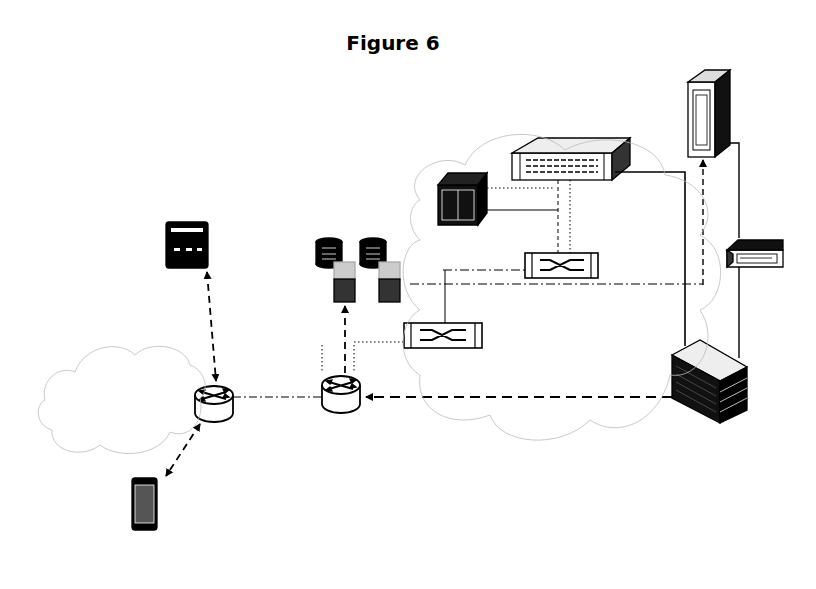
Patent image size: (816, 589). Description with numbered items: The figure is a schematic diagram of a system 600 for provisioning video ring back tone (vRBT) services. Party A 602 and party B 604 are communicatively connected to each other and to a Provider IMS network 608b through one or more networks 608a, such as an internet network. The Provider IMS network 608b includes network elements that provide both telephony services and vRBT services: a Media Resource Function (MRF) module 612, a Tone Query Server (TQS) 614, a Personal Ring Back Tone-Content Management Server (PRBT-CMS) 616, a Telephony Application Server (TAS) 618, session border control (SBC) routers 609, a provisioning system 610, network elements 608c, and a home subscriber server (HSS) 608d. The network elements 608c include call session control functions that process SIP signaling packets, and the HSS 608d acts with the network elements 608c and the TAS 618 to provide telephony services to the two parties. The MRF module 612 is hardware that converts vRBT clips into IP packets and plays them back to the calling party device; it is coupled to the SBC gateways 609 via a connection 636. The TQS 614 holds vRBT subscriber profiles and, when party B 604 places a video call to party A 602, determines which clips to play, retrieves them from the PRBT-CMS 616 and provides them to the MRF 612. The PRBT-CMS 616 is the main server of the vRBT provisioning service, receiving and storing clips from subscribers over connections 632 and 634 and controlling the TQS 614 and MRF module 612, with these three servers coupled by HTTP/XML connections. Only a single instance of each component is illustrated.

The system 600 is at (414, 306).
The party A 602 is at (158, 517).
The party B 604 is at (166, 230).
The networks 608a is at (135, 399).
The Provider IMS network 608b is at (562, 349).
The network elements 608c is at (582, 280).
The home subscriber server (HSS) 608d is at (462, 178).
The session border control (SBC) routers 609 is at (341, 415).
The provisioning system 610 is at (358, 245).
The Media Resource Function (MRF) module 612 is at (705, 422).
The Tone Query Server (TQS) 614 is at (745, 228).
The Personal Ring Back Tone-Content Management Server (PRBT-CMS) 616 is at (730, 108).
The Telephony Application Server (TAS) 618 is at (571, 142).
The connection 632 is at (339, 366).
The connection 634 is at (655, 292).
The connection 636 is at (565, 398).